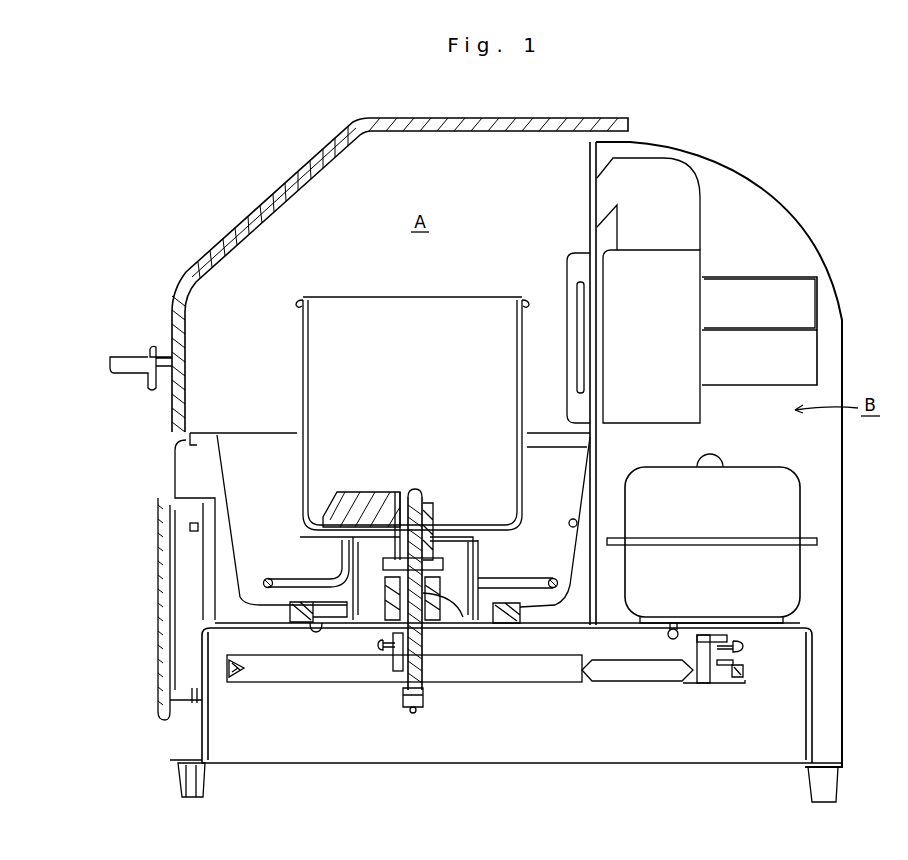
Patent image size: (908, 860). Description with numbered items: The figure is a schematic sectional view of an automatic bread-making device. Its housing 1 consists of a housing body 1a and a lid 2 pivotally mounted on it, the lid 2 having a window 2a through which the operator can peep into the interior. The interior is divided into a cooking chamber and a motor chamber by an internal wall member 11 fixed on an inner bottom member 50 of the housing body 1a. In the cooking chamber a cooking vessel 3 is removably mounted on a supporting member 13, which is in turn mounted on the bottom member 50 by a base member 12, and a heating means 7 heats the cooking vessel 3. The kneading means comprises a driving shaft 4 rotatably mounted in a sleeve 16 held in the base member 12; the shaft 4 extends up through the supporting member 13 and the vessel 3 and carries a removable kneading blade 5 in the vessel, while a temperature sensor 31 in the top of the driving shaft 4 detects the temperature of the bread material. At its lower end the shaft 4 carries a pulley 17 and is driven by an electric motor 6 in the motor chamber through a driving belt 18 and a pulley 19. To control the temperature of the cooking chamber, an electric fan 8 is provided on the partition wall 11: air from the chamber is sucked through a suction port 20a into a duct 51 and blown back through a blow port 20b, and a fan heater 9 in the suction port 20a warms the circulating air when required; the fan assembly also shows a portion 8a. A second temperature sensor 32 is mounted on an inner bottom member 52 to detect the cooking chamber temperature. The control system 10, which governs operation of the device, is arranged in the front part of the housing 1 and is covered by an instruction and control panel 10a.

The housing 1 is at (846, 544).
The housing body 1a is at (844, 600).
The lid 2 is at (413, 118).
The window 2a is at (286, 205).
The cooking vessel 3 is at (303, 382).
The driving shaft 4 is at (423, 690).
The kneading blade 5 is at (362, 492).
The electric motor 6 is at (778, 482).
The heating means 7 is at (270, 578).
The electric fan 8 is at (710, 275).
The control unit upper portion 8a is at (760, 298).
The fan heater 9 is at (578, 290).
The control system 10 is at (166, 670).
The instruction and control panel 10a is at (158, 592).
The internal wall member 11 is at (600, 462).
The base member 12 is at (300, 622).
The supporting member 13 is at (478, 545).
The sleeve 16 is at (425, 652).
The pulley 17 is at (263, 685).
The driving belt 18 is at (650, 684).
The pulley 19 is at (723, 688).
The suction port 20a is at (573, 358).
The blow port 20b is at (590, 200).
The temperature sensor 31 is at (416, 490).
The temperature sensor 32 is at (570, 520).
The inner bottom member 50 is at (802, 710).
The duct 51 is at (703, 200).
The inner bottom member 52 is at (225, 488).